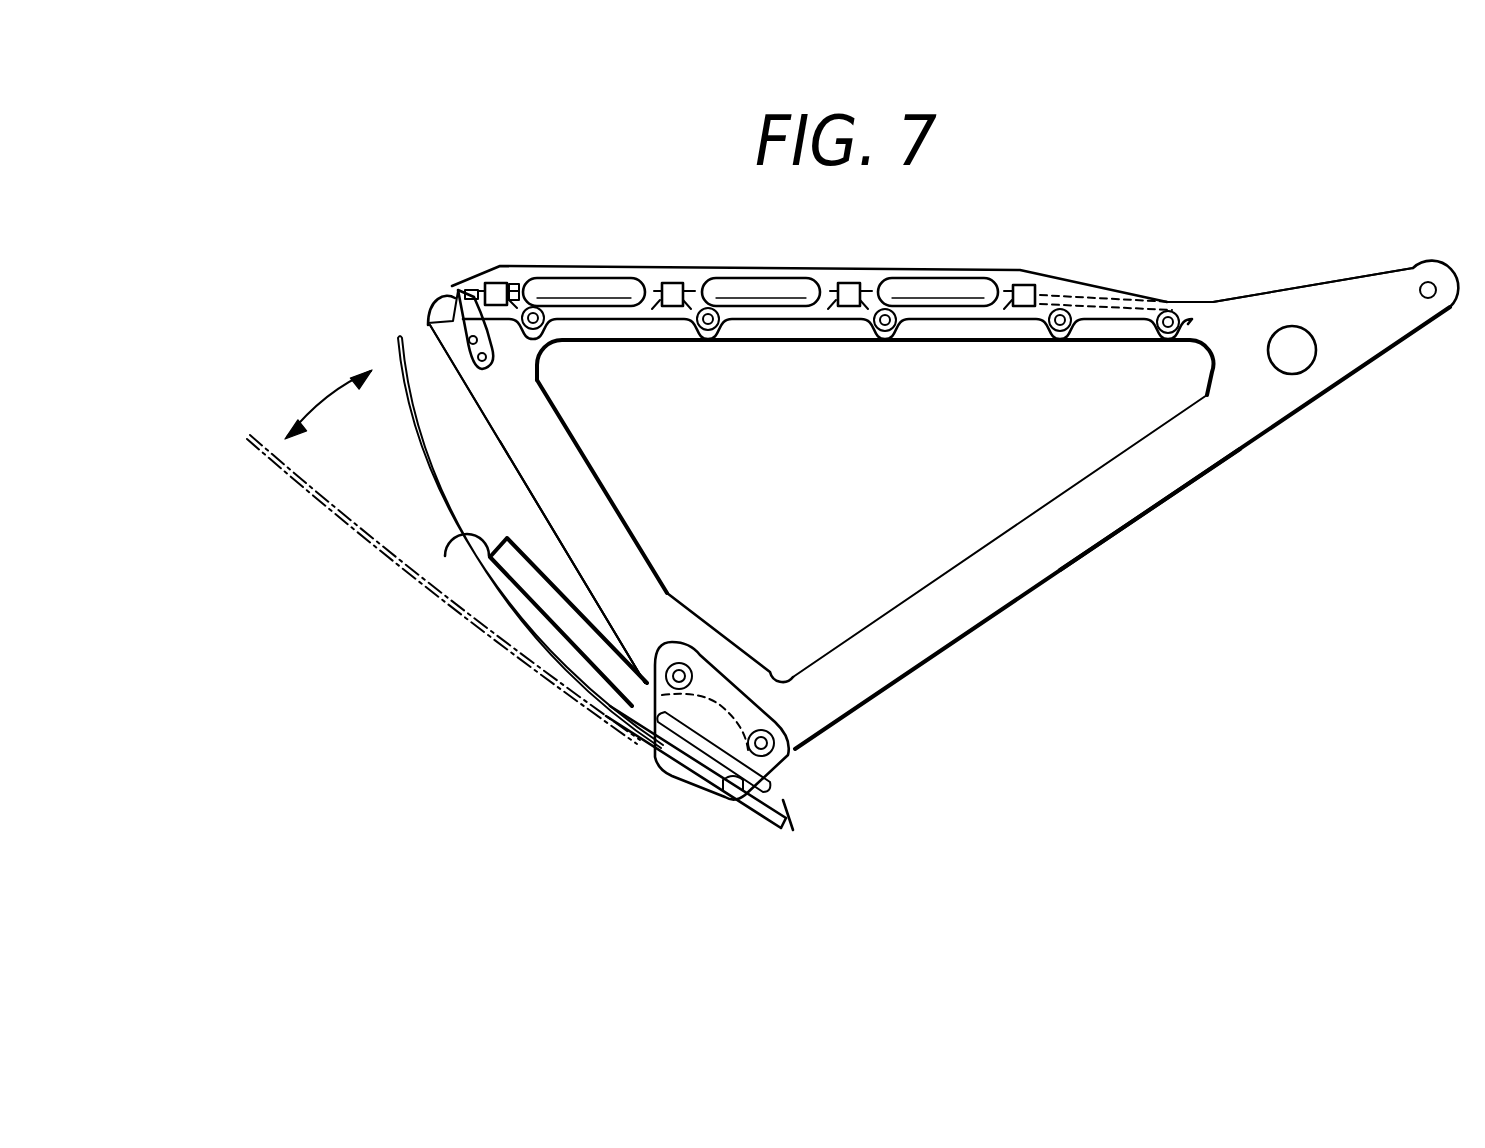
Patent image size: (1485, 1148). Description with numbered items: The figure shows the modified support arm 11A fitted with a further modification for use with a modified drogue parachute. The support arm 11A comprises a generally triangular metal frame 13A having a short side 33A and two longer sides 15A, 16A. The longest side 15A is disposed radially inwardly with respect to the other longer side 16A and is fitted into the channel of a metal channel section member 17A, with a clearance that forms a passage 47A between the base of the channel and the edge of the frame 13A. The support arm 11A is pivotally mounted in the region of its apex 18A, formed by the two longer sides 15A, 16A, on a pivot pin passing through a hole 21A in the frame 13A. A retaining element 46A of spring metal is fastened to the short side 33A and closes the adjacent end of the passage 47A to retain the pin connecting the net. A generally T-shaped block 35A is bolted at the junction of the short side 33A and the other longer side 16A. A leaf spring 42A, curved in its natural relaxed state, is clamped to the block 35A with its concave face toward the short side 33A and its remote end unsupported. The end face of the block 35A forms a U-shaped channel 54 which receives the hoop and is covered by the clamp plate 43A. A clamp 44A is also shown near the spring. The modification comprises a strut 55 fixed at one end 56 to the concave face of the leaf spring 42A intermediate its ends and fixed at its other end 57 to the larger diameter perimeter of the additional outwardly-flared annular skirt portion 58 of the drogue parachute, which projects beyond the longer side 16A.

The support arm 11A is at (1248, 461).
The frame 13A is at (1110, 534).
The longer side 15A is at (803, 335).
The longer side 16A is at (983, 577).
The channel section member 17A is at (847, 275).
The apex 18A is at (1405, 299).
The hole 21A is at (1410, 315).
The short side 33A is at (597, 540).
The block 35A is at (767, 718).
The leaf spring 42A is at (415, 432).
The clamp plate 43A is at (705, 793).
The clamp 44A is at (663, 773).
The retaining element 46A is at (430, 319).
The passage 47A is at (513, 283).
The U-shaped channel 54 is at (797, 810).
The strut 55 is at (562, 600).
The end of strut 56 is at (443, 560).
The other end of strut 57 is at (797, 827).
The additional annular skirt portion 58 is at (762, 817).